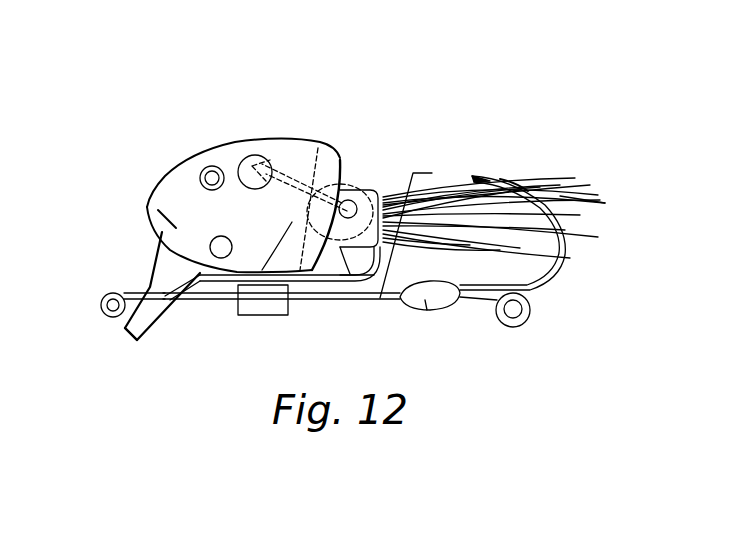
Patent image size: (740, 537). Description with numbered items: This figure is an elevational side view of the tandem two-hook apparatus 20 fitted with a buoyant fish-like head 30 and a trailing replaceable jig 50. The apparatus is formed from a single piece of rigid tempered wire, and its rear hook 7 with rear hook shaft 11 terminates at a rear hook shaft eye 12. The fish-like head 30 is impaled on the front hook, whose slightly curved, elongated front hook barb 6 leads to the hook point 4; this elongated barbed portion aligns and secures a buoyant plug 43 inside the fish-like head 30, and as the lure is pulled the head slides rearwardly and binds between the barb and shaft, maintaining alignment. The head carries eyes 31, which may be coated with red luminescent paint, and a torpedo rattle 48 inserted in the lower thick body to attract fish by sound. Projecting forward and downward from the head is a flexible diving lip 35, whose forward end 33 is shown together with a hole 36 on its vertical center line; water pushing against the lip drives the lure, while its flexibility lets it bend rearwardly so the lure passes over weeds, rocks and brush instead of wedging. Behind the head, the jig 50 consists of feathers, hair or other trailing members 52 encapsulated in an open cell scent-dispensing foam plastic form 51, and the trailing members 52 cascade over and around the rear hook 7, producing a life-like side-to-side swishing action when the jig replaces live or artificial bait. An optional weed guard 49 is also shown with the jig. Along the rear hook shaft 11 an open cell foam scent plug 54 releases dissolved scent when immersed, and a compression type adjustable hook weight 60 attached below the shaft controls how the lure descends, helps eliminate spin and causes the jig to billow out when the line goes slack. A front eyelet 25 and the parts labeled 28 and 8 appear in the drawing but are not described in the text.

The fish-like head 30 is at (243, 85).
The eyes 31 is at (200, 160).
The buoyant plug 43 is at (238, 170).
The point 4 is at (257, 168).
The front hook barb 6 is at (339, 197).
The jig 50 is at (388, 158).
The trailing members 52 is at (598, 200).
The weed guard 49 is at (431, 173).
The rear hook 7 is at (565, 250).
The band 28 is at (477, 176).
The tube top 8 is at (513, 182).
The forward end 33 is at (170, 188).
The hole 36 is at (150, 285).
The flexible diving lip 35 is at (125, 330).
The front eyelet 25 is at (105, 298).
The rear hook shaft 11 is at (313, 300).
The torpedo rattle 48 is at (220, 259).
The scent plug 54 is at (261, 312).
The foam plastic form 51 is at (353, 272).
The adjustable hook weight 60 is at (425, 300).
The tandem two-hook apparatus 20 is at (472, 300).
The rear hook shaft eye 12 is at (532, 316).